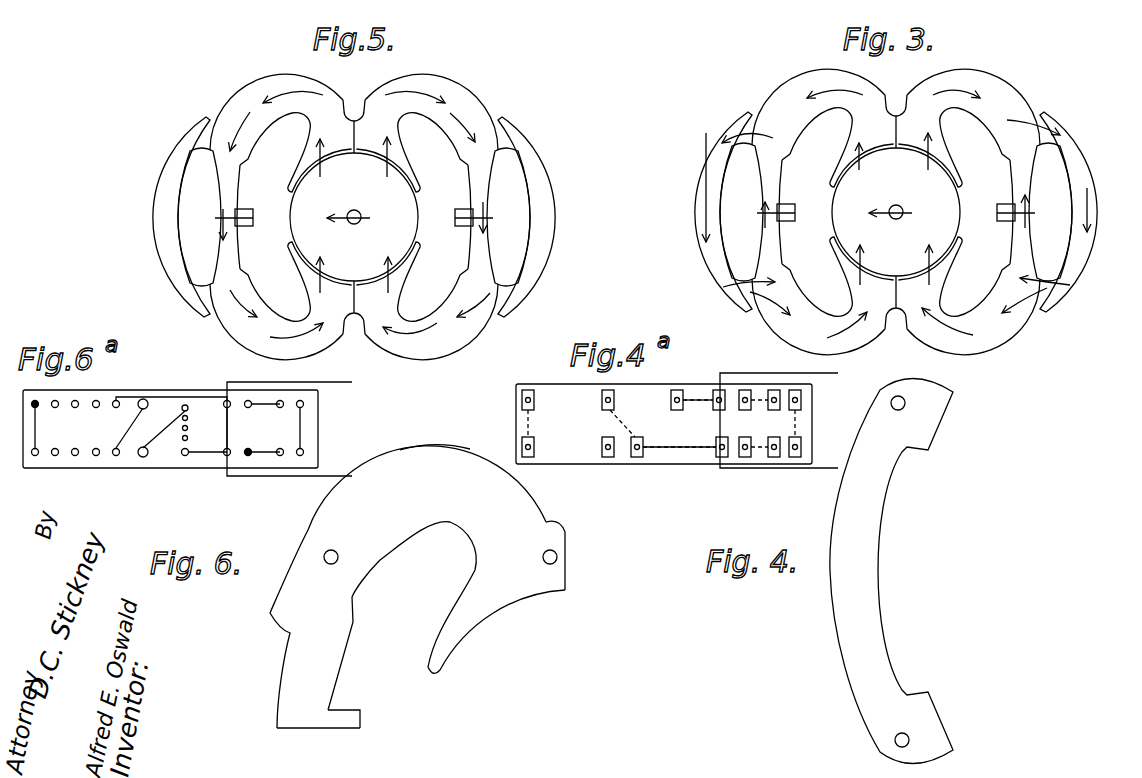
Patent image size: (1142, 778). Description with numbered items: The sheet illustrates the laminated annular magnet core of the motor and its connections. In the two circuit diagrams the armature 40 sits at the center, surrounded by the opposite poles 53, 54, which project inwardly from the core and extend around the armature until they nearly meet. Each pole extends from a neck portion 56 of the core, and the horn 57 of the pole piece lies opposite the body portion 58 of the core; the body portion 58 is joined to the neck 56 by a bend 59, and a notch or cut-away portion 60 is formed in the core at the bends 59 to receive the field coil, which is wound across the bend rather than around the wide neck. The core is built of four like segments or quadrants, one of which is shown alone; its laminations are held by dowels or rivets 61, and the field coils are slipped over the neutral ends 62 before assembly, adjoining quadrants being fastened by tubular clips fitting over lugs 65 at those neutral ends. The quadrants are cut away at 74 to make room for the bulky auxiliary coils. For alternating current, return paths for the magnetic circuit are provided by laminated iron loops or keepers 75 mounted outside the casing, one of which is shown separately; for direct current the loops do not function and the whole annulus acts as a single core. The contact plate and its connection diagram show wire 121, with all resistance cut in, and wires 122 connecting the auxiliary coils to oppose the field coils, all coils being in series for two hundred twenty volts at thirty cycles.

In FIG. 5, the rotor 40 is at (354, 217).
In FIG. 3, the rotor 40 is at (896, 212).
In FIG. 5, the pole 53 is at (362, 126).
In FIG. 3, the pole 53 is at (838, 108).
In FIG. 5, the pole 54 is at (334, 284).
In FIG. 3, the pole 54 is at (870, 274).
In FIG. 6, the pole 54 is at (507, 592).
In FIG. 5, the neck portion 56 is at (375, 284).
In FIG. 3, the neck portion 56 is at (914, 274).
In FIG. 6, the neck portion 56 is at (538, 530).
In FIG. 5, the horn of the pole-piece 57 is at (354, 217).
In FIG. 3, the horn of the pole-piece 57 is at (896, 212).
In FIG. 6, the horn of the pole-piece 57 is at (440, 647).
In FIG. 5, the body portion of the magnet core 58 is at (276, 112).
In FIG. 6, the body portion of the magnet core 58 is at (362, 518).
In FIG. 5, the bend 59 is at (431, 332).
In FIG. 3, the bend 59 is at (962, 317).
In FIG. 6, the bend 59 is at (458, 485).
In FIG. 5, the notch or cut-away portion 60 is at (354, 325).
In FIG. 3, the notch or cut-away portion 60 is at (955, 102).
In FIG. 6, the dowels or rivets 61 is at (326, 564).
In FIG. 4, the dowels or rivets 61 is at (892, 407).
In FIG. 5, the neutral end 62 is at (464, 230).
In FIG. 3, the neutral end 62 is at (790, 217).
In FIG. 6, the neutral end 62 is at (298, 730).
In FIG. 5, the lug 65 is at (248, 228).
In FIG. 3, the lug 65 is at (1004, 225).
In FIG. 6, the lug 65 is at (363, 717).
In FIG. 5, the cutaway 74 is at (354, 217).
In FIG. 3, the cutaway 74 is at (896, 212).
In FIG. 6, the cutaway 74 is at (283, 665).
In FIG. 5, the laminated iron loop or by-pass 75 is at (354, 217).
In FIG. 3, the laminated iron loop or by-pass 75 is at (912, 212).
In FIG. 4, the laminated iron loop or by-pass 75 is at (847, 672).
In FIG. 4A, the wire 121 is at (697, 395).
In FIG. 6A, the wires 122 is at (165, 397).
In FIG. 4A, the wires 122 is at (670, 452).